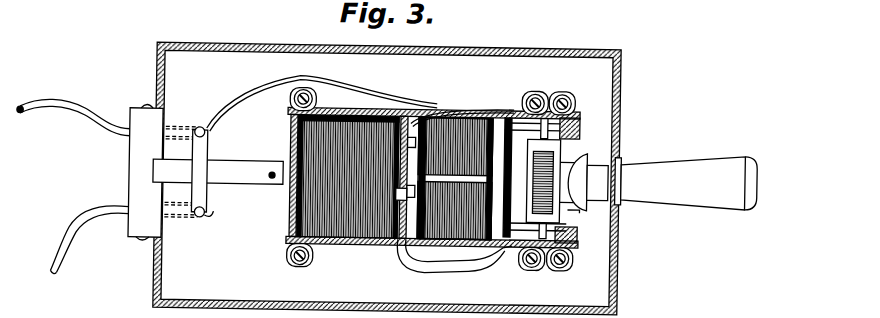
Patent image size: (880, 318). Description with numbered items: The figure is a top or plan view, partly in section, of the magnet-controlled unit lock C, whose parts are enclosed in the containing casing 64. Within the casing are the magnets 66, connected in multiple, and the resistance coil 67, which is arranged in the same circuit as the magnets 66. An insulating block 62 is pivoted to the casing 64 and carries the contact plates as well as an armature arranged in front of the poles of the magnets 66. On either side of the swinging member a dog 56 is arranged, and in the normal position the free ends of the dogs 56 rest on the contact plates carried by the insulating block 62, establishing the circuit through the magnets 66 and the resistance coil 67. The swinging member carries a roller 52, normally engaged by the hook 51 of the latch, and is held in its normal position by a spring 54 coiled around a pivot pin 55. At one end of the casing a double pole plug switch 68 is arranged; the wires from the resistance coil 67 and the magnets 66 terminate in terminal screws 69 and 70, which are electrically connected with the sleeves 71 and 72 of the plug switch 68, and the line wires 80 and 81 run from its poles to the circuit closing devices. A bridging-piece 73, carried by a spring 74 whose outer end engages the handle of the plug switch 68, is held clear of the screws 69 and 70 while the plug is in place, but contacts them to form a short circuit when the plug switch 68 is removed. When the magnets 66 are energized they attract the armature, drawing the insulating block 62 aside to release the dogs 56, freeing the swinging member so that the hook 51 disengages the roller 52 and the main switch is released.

The magnet-controlled unit lock C is at (387, 178).
The hook 51 is at (587, 159).
The roller 52 is at (573, 210).
The spring 54 is at (552, 154).
The pivot pin 55 is at (581, 230).
The dog 56 is at (516, 121).
The insulating block 62 is at (541, 250).
The containing casing 64 is at (356, 245).
The magnets 66 is at (451, 122).
The resistance coil 67 is at (361, 115).
The double pole plug switch 68 is at (129, 184).
The terminal screw 69 is at (207, 135).
The terminal screw 70 is at (209, 218).
The sleeve 71 is at (179, 130).
The sleeve 72 is at (178, 221).
The bridging-piece 73 is at (208, 151).
The spring 74 is at (240, 180).
The line wire 80 is at (67, 242).
The line wire 81 is at (71, 112).